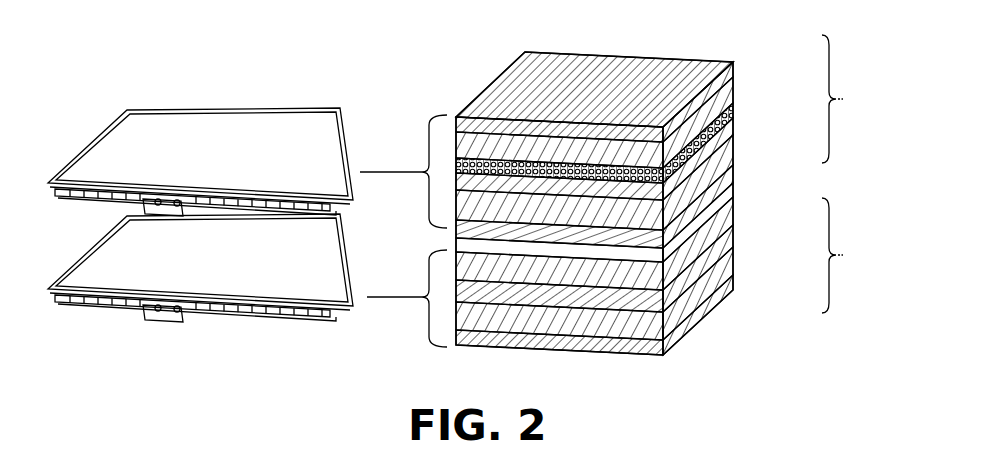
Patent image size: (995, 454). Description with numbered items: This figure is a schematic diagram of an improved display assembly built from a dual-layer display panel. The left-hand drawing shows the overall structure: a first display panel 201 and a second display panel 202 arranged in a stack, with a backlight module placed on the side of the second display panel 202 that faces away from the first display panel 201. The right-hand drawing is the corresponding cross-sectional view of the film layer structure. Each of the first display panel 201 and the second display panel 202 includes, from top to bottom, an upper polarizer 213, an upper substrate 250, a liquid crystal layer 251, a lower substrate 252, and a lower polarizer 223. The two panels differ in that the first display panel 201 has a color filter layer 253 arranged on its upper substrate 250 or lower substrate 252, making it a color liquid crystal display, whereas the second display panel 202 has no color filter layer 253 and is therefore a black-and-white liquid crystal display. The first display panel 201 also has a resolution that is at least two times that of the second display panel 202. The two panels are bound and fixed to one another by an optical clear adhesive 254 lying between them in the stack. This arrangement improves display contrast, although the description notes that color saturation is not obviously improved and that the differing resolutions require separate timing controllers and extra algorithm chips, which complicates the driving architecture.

The first display panel 201 is at (283, 108).
The second display panel 202 is at (381, 235).
The upper polarizer 213 is at (735, 70).
The upper substrate 250 is at (735, 98).
The color filter layer 253 is at (735, 120).
The liquid crystal layer 251 is at (735, 147).
The lower substrate 252 is at (735, 170).
The lower polarizer 223 is at (735, 180).
The optical clear adhesive 254 is at (735, 194).